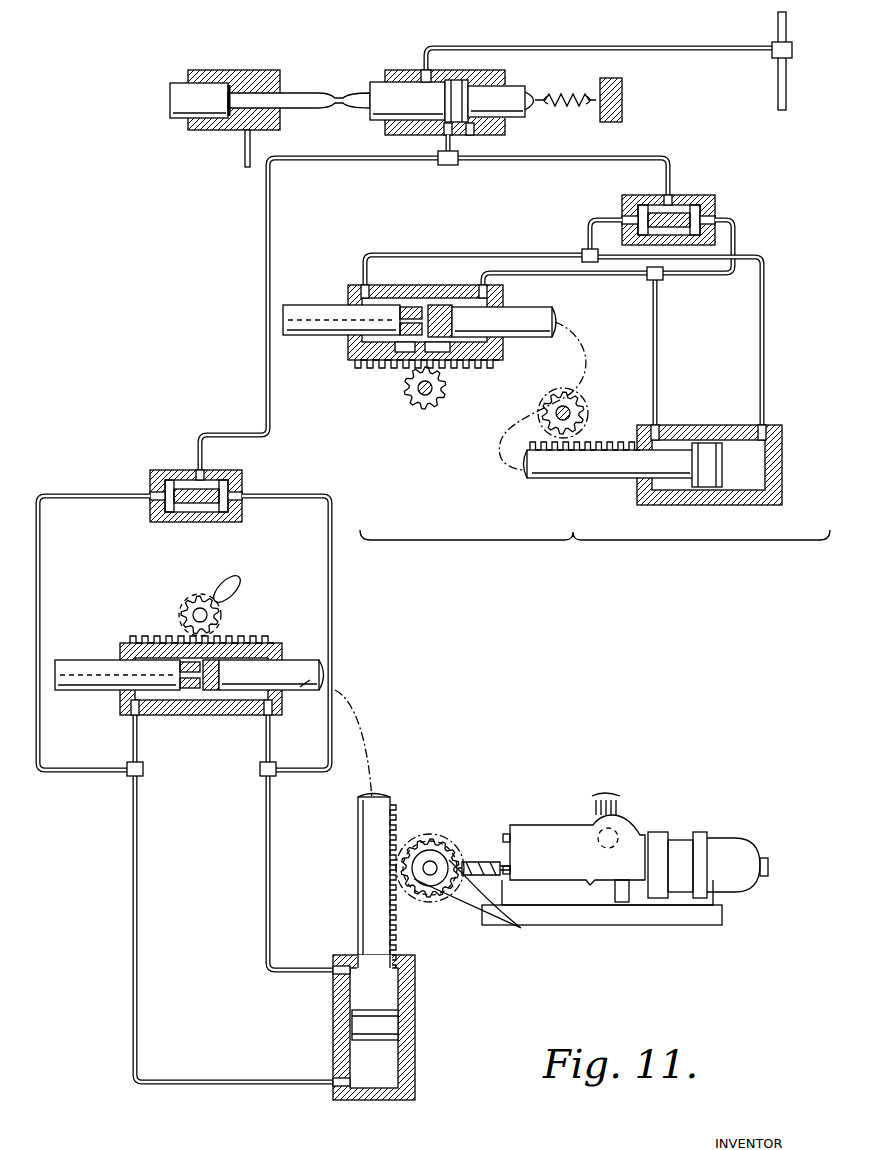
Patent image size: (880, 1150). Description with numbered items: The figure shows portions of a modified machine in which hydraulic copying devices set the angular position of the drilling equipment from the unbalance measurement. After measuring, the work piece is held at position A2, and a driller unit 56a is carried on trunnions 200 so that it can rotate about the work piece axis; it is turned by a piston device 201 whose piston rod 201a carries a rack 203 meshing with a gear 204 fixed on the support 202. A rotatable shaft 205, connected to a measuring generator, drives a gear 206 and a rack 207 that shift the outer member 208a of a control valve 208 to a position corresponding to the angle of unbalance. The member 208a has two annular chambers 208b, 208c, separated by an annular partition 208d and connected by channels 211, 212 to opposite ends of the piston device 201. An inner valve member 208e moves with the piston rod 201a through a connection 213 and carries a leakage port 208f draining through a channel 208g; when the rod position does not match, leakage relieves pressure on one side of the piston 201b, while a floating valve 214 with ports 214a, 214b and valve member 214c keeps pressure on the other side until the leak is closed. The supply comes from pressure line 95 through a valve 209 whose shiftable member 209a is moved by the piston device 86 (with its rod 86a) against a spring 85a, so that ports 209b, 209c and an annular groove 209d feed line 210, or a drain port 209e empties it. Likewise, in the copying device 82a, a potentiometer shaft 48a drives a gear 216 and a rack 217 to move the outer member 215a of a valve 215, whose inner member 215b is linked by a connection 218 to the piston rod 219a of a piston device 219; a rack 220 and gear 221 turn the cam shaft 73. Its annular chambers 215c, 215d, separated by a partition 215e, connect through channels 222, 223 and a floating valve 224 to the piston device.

The piston device 86 is at (216, 70).
The cylinder drain rod 86a is at (246, 140).
The pressure line 95 is at (786, 98).
The valve 209 is at (432, 89).
The shiftable valve member 209a is at (372, 110).
The port 209b is at (428, 72).
The port 209c is at (446, 138).
The annular groove 209d is at (458, 92).
The drain port 209e is at (470, 132).
The spring 85a is at (572, 96).
The line 210 is at (266, 205).
The floating valve 224 is at (700, 196).
The channel 223 is at (764, 262).
The channel 222 is at (658, 352).
The valve 215 is at (426, 308).
The outer valve member 215a is at (497, 352).
The inner valve member 215b is at (530, 322).
The annular chamber 215c is at (355, 342).
The annular chamber 215d is at (458, 305).
The partition 215e is at (415, 330).
The rack 217 is at (448, 366).
The gear 216 is at (395, 406).
The potentiometer shaft 48a is at (418, 392).
The connection 218 is at (520, 398).
The gear 221 is at (566, 408).
The cam shaft 73 is at (572, 412).
The piston device 219 is at (653, 442).
The piston rod 219a is at (623, 460).
The rack 220 is at (596, 447).
The hydraulic copying device 82a is at (595, 553).
The floating valve 214 is at (184, 597).
The port 214a is at (140, 500).
The port 214b is at (250, 500).
The valve member 214c is at (184, 522).
The channel 211 is at (130, 866).
The channel 212 is at (252, 880).
The control valve 208 is at (215, 704).
The outer valve member 208a is at (215, 700).
The annular chamber 208b is at (165, 700).
The annular chamber 208c is at (255, 705).
The annular partition 208d is at (196, 690).
The inner valve member 208e is at (300, 686).
The leakage port 208f is at (286, 665).
The channel 208g is at (82, 680).
The rack 207 is at (250, 640).
The rotatable shaft 205 is at (186, 612).
The gear 206 is at (192, 622).
The connection 213 is at (376, 768).
The piston device 201 is at (372, 1027).
The piston rod 201a is at (347, 903).
The piston 201b is at (355, 1026).
The rack 203 is at (386, 905).
The gear 204 is at (402, 825).
The trunnion 200 is at (442, 855).
The work piece position A2 is at (436, 830).
The driller unit 56a is at (530, 830).
The support 202 is at (575, 925).